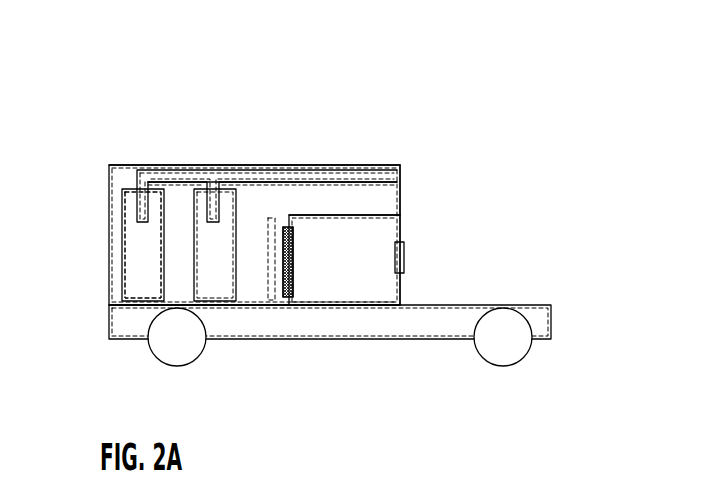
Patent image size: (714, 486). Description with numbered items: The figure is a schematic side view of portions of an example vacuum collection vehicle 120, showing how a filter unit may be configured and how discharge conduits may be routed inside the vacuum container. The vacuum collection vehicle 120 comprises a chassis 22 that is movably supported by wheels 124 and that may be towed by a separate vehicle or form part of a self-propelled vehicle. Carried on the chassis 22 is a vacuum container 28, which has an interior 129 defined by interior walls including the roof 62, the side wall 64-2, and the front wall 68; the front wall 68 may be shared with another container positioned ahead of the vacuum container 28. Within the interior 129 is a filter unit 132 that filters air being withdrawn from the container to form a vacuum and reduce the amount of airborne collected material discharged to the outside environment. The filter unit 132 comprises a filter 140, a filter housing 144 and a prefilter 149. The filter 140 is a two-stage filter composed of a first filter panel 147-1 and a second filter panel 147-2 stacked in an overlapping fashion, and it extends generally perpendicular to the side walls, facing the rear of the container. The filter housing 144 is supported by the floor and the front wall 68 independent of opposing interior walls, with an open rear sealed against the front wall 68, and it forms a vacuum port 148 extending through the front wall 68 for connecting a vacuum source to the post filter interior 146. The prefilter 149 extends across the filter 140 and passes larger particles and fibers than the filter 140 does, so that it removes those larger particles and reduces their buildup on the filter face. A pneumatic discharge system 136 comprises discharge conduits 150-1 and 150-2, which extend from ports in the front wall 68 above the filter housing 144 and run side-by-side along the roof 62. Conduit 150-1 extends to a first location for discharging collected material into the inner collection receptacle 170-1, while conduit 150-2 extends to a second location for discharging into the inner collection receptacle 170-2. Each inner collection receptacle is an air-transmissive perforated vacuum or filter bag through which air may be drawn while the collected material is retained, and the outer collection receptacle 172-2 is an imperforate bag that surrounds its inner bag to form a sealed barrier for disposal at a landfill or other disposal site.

The chassis 22 is at (547, 342).
The wheels 124 is at (185, 367).
The vacuum container 28 is at (108, 180).
The roof 62 is at (116, 177).
The discharge conduit 150-2 is at (162, 172).
The discharge conduit 150-1 is at (298, 180).
The inner collection receptacle 170-2 is at (122, 220).
The outer collection receptacle 172-2 is at (122, 257).
The inner collection receptacle 170-1 is at (195, 232).
The interior 129 is at (252, 205).
The vacuum collection vehicle 120 is at (270, 135).
The first filter panel 147-1 is at (282, 225).
The prefilter 149 is at (265, 300).
The filter 140 is at (292, 298).
The second filter panel 147-2 is at (294, 268).
The front wall 68 is at (393, 203).
The pneumatic discharge system 136 is at (345, 164).
The filter housing 144 is at (323, 215).
The filter unit 132 is at (364, 210).
The vacuum port 148 is at (404, 258).
The post filter interior 146 is at (382, 289).
The side wall 64-2 is at (585, 470).